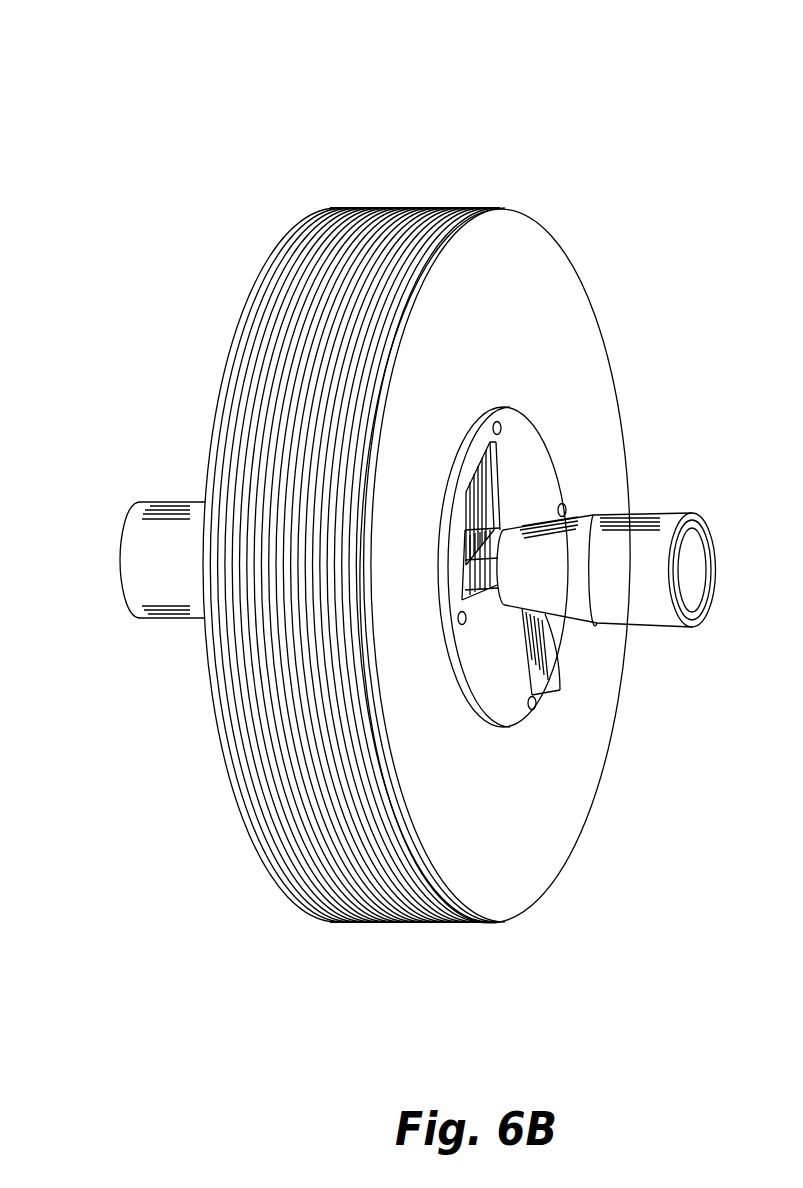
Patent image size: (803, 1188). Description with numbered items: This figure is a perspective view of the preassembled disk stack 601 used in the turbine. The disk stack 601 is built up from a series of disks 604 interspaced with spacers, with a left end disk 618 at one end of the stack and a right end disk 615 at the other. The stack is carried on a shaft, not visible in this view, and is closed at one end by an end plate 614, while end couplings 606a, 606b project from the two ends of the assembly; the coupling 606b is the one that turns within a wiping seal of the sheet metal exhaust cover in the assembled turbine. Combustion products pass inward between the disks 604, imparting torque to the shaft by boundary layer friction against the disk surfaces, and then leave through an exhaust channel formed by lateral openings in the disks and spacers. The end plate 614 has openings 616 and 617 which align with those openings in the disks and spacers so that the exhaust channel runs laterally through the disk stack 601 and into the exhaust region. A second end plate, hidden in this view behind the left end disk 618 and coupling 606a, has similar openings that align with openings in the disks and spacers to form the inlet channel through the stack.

The disk stack 601 is at (523, 127).
The disks 604 is at (383, 198).
The left end disk 618 is at (232, 327).
The right end disk 615 is at (582, 345).
The end plate 614 is at (552, 485).
The opening 616 is at (496, 490).
The opening 617 is at (552, 633).
The end coupling 606a is at (172, 502).
The end coupling 606b is at (660, 510).